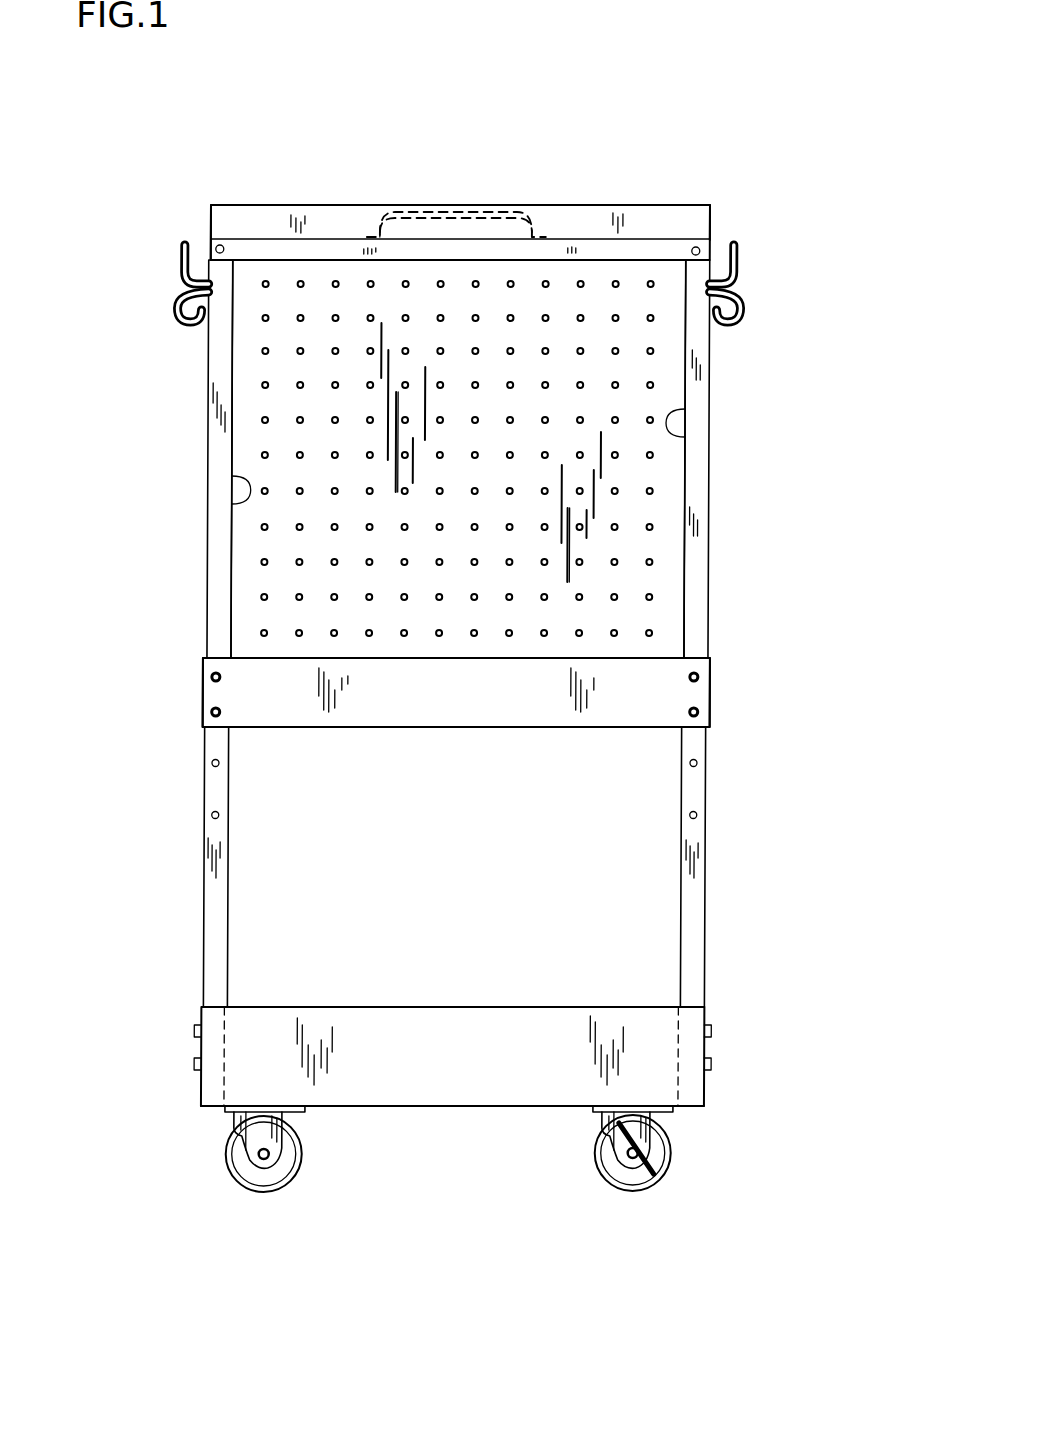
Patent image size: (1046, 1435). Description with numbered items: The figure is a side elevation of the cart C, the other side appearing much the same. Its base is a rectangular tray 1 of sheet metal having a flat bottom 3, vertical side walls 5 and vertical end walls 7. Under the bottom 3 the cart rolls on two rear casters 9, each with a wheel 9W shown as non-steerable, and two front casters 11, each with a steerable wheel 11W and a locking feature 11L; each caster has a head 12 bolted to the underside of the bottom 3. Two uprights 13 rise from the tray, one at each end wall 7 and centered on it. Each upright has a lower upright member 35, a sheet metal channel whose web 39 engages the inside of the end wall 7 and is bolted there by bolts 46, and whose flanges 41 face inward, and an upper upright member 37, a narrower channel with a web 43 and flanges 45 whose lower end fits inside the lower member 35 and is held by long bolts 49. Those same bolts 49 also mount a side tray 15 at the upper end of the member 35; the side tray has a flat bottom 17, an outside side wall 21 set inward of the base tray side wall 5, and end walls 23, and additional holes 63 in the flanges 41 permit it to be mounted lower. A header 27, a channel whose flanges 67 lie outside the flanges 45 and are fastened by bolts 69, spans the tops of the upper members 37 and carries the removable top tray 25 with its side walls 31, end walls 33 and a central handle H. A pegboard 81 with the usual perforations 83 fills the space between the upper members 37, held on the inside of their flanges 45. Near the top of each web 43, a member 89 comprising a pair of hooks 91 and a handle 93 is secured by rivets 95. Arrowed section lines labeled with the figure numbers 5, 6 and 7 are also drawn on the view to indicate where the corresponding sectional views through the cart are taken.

The rectangular tray 1 is at (204, 1109).
The flat bottom 3 is at (462, 1108).
The vertical side wall 5 is at (428, 1030).
The section line 6 is at (127, 722).
The vertical end wall 7 is at (200, 1050).
The rear caster 9 is at (238, 1182).
The wheel 9W is at (258, 1195).
The front caster 11 is at (630, 1193).
The locking feature 11L is at (660, 1168).
The steerable wheel 11W is at (650, 1195).
The head 12 is at (308, 1114).
The upright 13 is at (207, 597).
The side tray 15 is at (204, 728).
The flat bottom 17 is at (415, 730).
The outside vertical side wall 21 is at (478, 704).
The vertical end wall 23 is at (205, 698).
The top tray 25 is at (715, 203).
The header 27 is at (612, 247).
The vertical side wall 31 is at (362, 228).
The vertical end wall 33 is at (198, 210).
The lower upright member 35 is at (205, 828).
The upper upright member 37 is at (207, 376).
The web 39 is at (207, 912).
The flange 41 is at (231, 982).
The web 43 is at (210, 474).
The flange 45 is at (233, 510).
The bolt 46 is at (198, 1031).
The bolt 49 is at (222, 711).
The bolt hole 63 is at (222, 814).
The flange 67 is at (556, 250).
The bolt 69 is at (245, 208).
The pegboard 81 is at (672, 448).
The perforation 83 is at (655, 526).
The hook member 89 is at (178, 287).
The hook 91 is at (193, 330).
The handle 93 is at (183, 240).
The rivet 95 is at (186, 300).
The handle H is at (462, 208).
The cart C is at (185, 420).